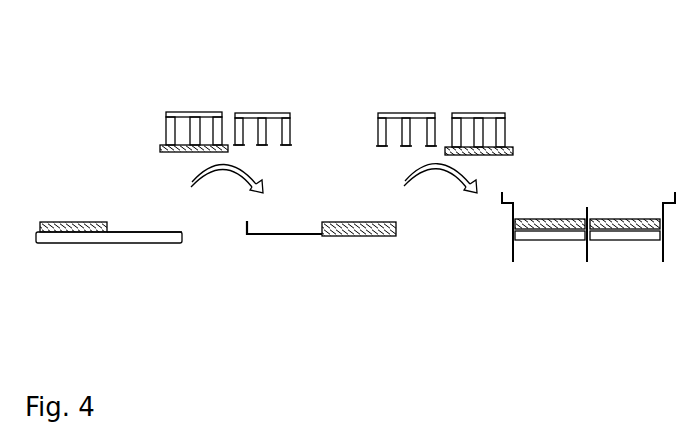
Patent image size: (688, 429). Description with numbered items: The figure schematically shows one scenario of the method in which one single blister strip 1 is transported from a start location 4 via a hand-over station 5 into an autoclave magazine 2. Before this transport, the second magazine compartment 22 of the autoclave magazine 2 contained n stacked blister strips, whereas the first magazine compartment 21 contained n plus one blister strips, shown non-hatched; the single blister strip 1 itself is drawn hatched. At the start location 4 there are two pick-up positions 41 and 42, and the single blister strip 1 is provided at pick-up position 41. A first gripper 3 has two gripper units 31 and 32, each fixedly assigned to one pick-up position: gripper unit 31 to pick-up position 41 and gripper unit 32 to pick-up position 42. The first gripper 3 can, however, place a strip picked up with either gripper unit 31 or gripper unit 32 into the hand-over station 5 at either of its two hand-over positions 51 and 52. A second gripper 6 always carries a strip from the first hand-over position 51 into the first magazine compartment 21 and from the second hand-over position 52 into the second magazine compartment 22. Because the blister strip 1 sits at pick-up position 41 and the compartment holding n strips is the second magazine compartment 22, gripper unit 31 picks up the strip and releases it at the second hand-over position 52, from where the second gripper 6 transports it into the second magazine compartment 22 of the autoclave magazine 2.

The blister strip 1 is at (157, 150).
The autoclave magazine 2 is at (588, 226).
The first magazine compartment 21 is at (551, 263).
The second magazine compartment 22 is at (617, 263).
The first gripper 3 is at (230, 85).
The gripper unit 31 is at (192, 112).
The gripper unit 32 is at (257, 112).
The start location 4 is at (104, 150).
The pick-up position 41 is at (55, 210).
The pick-up position 42 is at (135, 213).
The hand-over station 5 is at (321, 246).
The first hand-over position 51 is at (280, 254).
The second hand-over position 52 is at (345, 254).
The second gripper 6 is at (412, 112).